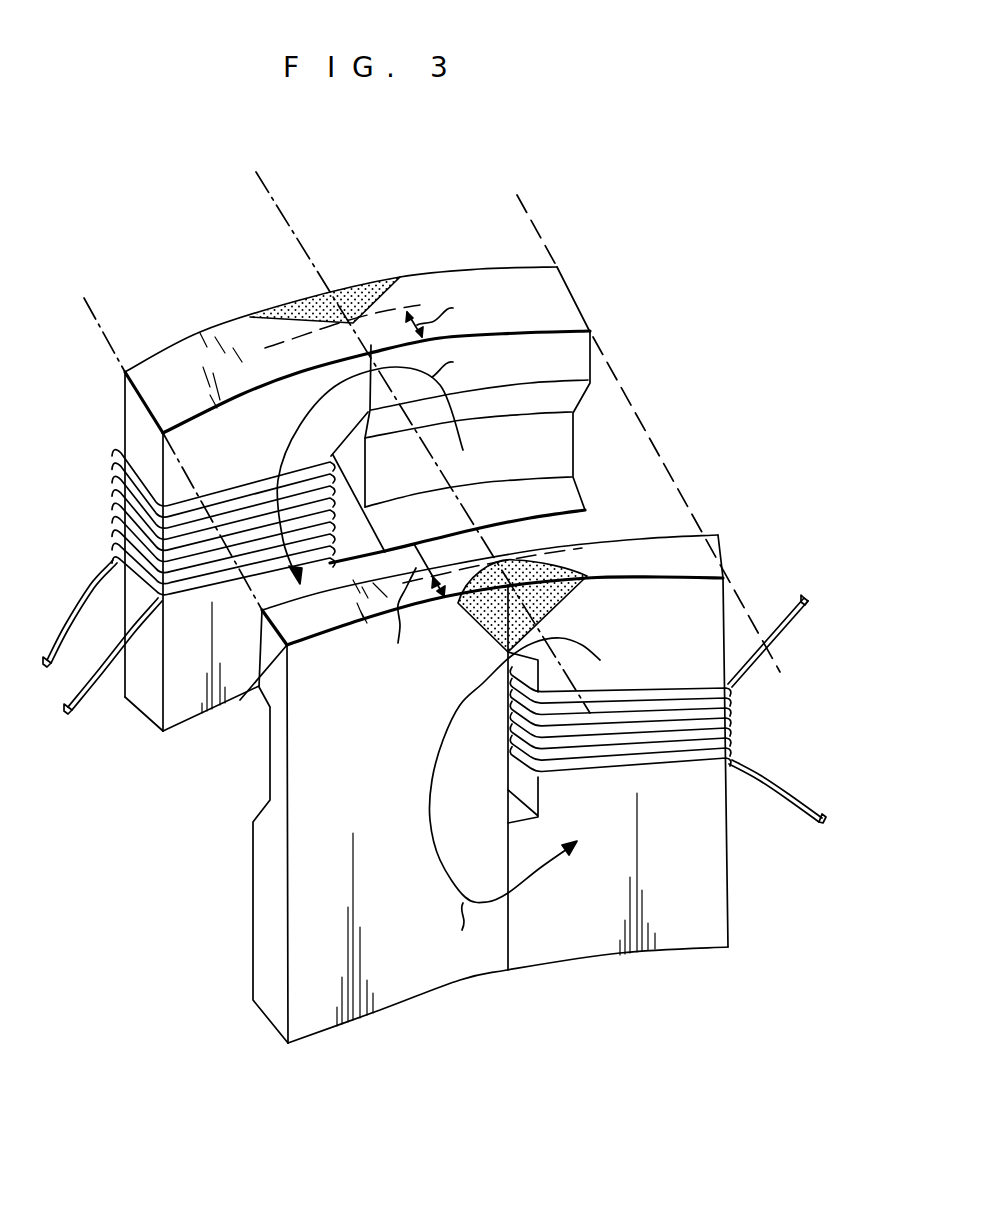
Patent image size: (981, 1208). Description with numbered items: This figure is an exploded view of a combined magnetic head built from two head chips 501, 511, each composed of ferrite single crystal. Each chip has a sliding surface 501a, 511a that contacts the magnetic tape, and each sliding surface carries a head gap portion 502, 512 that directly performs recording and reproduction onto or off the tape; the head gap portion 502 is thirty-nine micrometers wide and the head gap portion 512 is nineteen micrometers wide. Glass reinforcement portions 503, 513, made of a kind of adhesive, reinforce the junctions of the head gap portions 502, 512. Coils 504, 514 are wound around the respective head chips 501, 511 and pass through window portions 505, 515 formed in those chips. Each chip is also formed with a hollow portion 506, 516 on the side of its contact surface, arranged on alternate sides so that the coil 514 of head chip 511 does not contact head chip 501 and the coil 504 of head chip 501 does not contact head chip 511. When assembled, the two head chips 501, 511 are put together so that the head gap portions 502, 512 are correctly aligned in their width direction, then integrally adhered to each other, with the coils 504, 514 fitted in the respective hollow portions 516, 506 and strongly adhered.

The head chip 501 is at (415, 484).
The sliding surface 501a is at (565, 300).
The head gap portion 502 is at (400, 290).
The glass reinforcement portion 503 is at (354, 285).
The coil 504 is at (118, 515).
The window portion 505 is at (240, 700).
The hollow portion 506 is at (557, 453).
The head chip 511 is at (485, 785).
The sliding surface 511a is at (697, 553).
The head gap portion 512 is at (470, 613).
The glass reinforcement portion 513 is at (560, 603).
The coil 514 is at (730, 730).
The window portion 515 is at (538, 793).
The hollow portion 516 is at (265, 773).